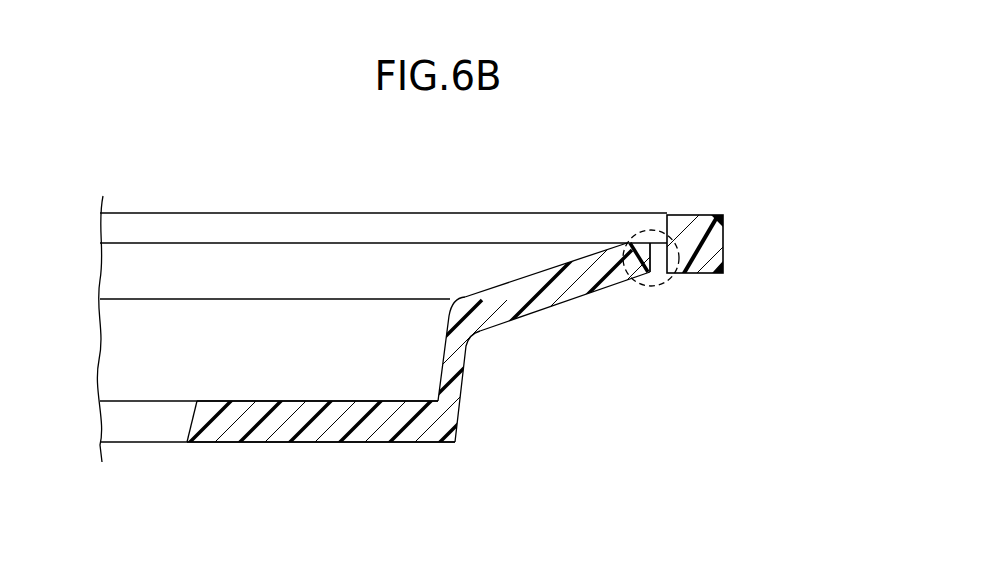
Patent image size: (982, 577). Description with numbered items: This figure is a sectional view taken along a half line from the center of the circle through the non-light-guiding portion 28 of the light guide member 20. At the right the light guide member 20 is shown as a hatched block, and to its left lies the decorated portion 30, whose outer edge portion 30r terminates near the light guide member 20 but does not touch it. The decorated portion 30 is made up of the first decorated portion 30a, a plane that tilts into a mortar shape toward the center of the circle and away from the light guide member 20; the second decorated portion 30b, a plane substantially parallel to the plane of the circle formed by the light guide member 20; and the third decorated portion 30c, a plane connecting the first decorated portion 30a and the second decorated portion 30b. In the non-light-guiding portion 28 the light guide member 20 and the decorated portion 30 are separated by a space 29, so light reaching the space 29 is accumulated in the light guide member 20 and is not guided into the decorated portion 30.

The light guide member 20 is at (703, 240).
The non-light-guiding portion 28 is at (672, 288).
The space 29 is at (655, 253).
The decorated portion 30 is at (421, 378).
The first decorated portion 30a is at (513, 298).
The second decorated portion 30b is at (403, 437).
The third decorated portion 30c is at (458, 370).
The outer edge portion 30r is at (660, 252).